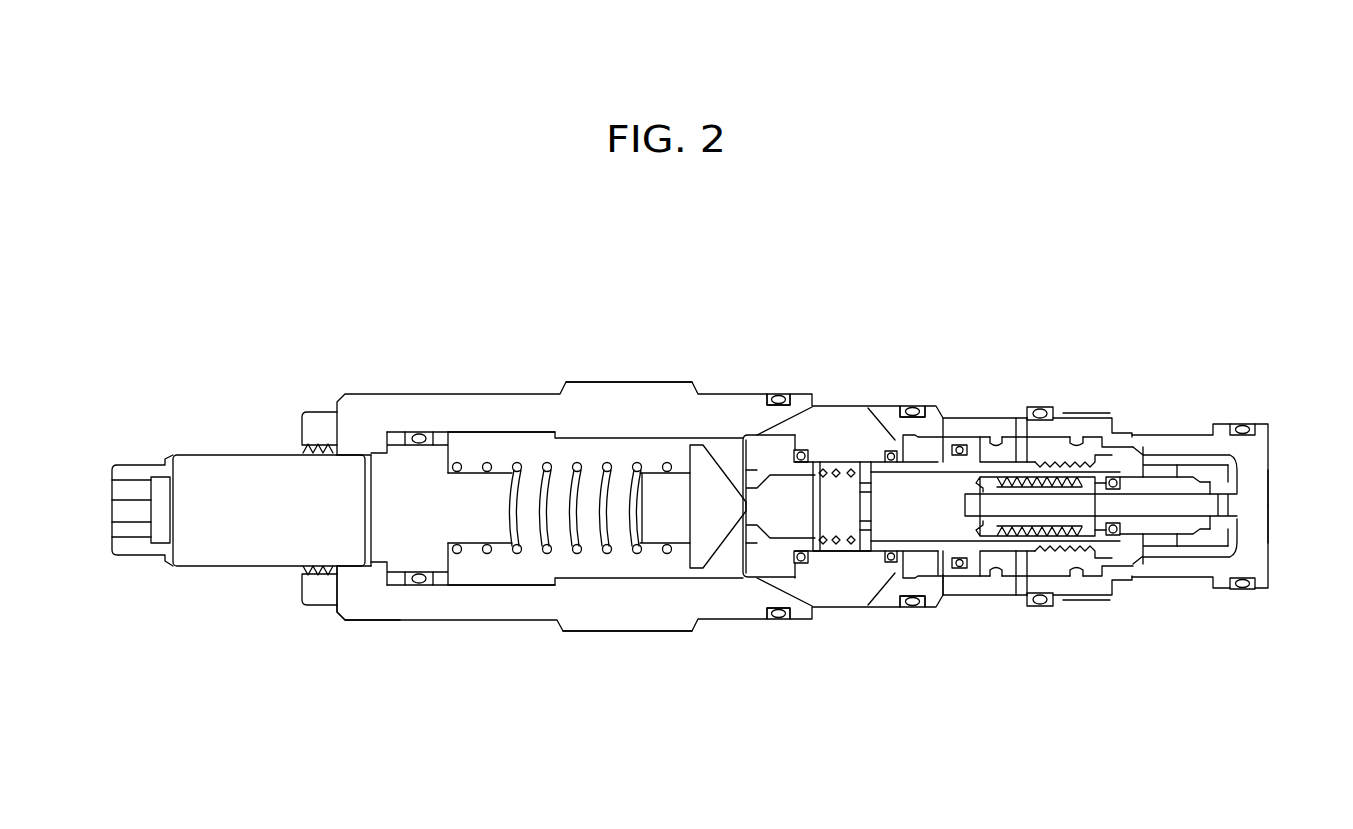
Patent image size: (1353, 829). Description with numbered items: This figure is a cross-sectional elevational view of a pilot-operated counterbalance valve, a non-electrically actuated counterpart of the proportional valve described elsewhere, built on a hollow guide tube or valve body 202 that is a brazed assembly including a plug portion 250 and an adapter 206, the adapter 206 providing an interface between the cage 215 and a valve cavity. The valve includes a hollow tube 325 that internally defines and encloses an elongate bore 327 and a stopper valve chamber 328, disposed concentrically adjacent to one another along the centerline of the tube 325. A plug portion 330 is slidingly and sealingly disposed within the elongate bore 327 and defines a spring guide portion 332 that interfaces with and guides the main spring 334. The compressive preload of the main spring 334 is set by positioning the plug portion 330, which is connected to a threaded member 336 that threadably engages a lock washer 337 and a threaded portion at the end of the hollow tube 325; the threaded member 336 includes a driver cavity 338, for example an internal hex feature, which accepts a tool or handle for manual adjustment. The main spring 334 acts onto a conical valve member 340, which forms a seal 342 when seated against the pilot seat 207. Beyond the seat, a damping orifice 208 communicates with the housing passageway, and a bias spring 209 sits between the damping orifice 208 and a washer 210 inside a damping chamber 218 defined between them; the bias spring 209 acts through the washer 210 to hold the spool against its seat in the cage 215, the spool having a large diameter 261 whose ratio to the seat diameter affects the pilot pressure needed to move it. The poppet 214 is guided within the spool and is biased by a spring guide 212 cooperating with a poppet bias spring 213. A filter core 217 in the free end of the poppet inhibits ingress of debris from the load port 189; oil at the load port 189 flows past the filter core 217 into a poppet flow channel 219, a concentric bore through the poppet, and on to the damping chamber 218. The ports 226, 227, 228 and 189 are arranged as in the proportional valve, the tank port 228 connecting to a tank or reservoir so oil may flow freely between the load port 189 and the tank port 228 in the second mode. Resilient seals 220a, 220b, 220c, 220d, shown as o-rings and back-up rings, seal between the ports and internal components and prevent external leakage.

The driver cavity 338 is at (888, 216).
The threaded member 336 is at (210, 533).
The lock washer 337 is at (313, 429).
The valve body 202 is at (587, 634).
The hollow tube 325 is at (580, 400).
The plug portion 250 is at (372, 598).
The port 226 is at (878, 407).
The port 227 is at (1003, 440).
The tank port 228 is at (1145, 452).
The resilient seal 220a is at (425, 432).
The resilient seal 220b is at (780, 393).
The resilient seal 220c is at (915, 403).
The resilient seal 220d is at (1077, 440).
The plug portion 330 is at (405, 485).
The elongate bore 327 is at (497, 444).
The spring guide portion 332 is at (478, 522).
The main spring 334 is at (543, 553).
The stopper valve chamber 328 is at (638, 568).
The conical valve member 340 is at (707, 487).
The adapter 206 is at (768, 562).
The pilot seat 207 is at (735, 602).
The seal 342 is at (735, 545).
The damping orifice 208 is at (800, 563).
The bias spring 209 is at (848, 530).
The damping chamber 218 is at (838, 540).
The washer 210 is at (862, 545).
The large diameter 261 is at (962, 545).
The spring guide 212 is at (1027, 523).
The poppet bias spring 213 is at (1077, 522).
The poppet flow channel 219 is at (1100, 545).
The poppet 214 is at (1143, 516).
The cage 215 is at (1185, 565).
The filter core 217 is at (1235, 512).
The load port 189 is at (1244, 483).